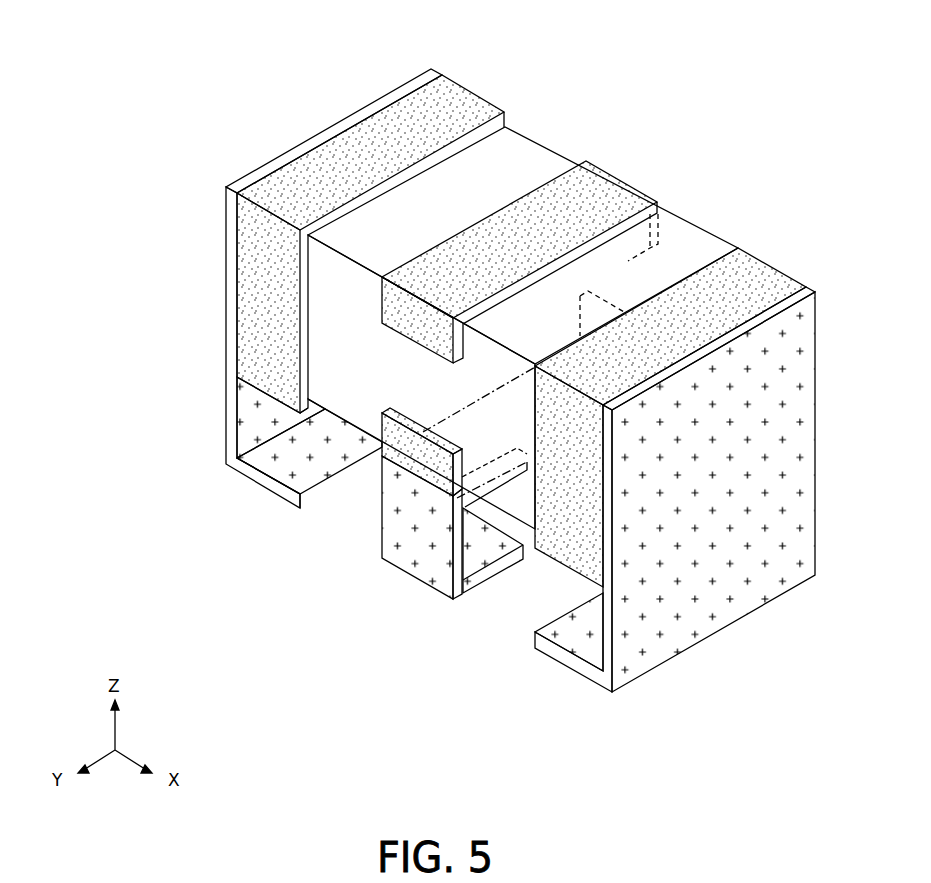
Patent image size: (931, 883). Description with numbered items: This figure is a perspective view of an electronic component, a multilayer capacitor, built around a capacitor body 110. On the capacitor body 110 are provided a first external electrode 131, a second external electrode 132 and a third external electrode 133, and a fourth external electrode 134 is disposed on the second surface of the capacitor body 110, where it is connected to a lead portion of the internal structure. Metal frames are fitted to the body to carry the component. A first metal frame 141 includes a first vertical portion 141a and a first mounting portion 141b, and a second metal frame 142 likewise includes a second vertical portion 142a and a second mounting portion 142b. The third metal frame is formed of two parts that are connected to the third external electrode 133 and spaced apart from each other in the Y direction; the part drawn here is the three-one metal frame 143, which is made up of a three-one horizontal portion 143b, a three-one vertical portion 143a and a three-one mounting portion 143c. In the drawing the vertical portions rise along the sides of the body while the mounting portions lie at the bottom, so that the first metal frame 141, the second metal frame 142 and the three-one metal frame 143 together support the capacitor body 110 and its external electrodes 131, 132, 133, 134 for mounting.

The capacitor body 110 is at (680, 255).
The first external electrode 131 is at (458, 100).
The second external electrode 132 is at (764, 282).
The third external electrode 133 is at (383, 447).
The fourth external electrode 134 is at (612, 190).
The first metal frame 141 is at (261, 326).
The first vertical portion 141a is at (228, 437).
The first mounting portion 141b is at (262, 480).
The second metal frame 142 is at (628, 537).
The second vertical portion 142a is at (638, 636).
The second mounting portion 142b is at (560, 640).
The 3-1st metal frame 143 is at (381, 566).
The 3-1st vertical portion 143a is at (397, 560).
The 3-1st horizontal portion 143b is at (480, 476).
The 3-1st mounting portion 143c is at (500, 560).